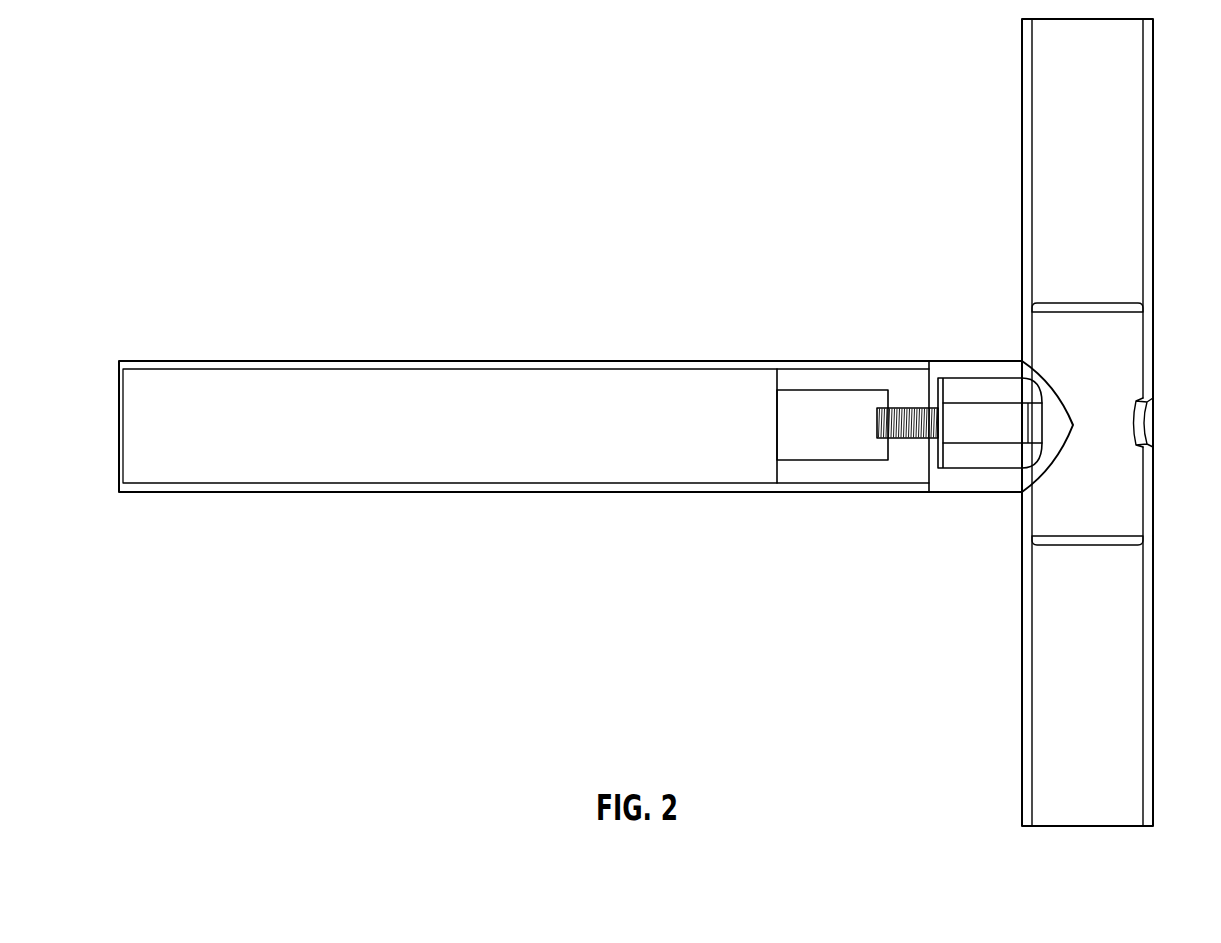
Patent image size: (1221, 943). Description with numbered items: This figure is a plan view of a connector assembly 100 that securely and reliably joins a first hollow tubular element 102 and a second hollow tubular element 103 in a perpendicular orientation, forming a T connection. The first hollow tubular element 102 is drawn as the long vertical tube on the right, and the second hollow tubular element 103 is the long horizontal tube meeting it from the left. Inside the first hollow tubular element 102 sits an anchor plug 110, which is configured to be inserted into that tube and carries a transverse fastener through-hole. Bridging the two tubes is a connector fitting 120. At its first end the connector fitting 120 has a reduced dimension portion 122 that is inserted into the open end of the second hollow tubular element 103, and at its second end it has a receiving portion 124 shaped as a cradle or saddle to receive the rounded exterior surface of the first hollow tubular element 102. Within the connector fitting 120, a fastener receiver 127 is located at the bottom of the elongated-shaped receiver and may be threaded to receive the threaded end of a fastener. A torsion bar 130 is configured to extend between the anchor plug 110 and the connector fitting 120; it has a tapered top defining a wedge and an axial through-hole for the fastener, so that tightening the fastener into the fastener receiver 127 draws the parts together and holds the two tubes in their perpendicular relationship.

The connector assembly 100 is at (304, 128).
The first hollow tubular element 102 is at (1050, 695).
The second hollow tubular element 103 is at (438, 473).
The anchor plug 110 is at (1133, 343).
The connector fitting 120 is at (845, 495).
The reduced dimension portion 122 is at (907, 465).
The receiving portion 124 is at (1012, 373).
The fastener receiver 127 is at (888, 410).
The torsion bar 130 is at (975, 418).